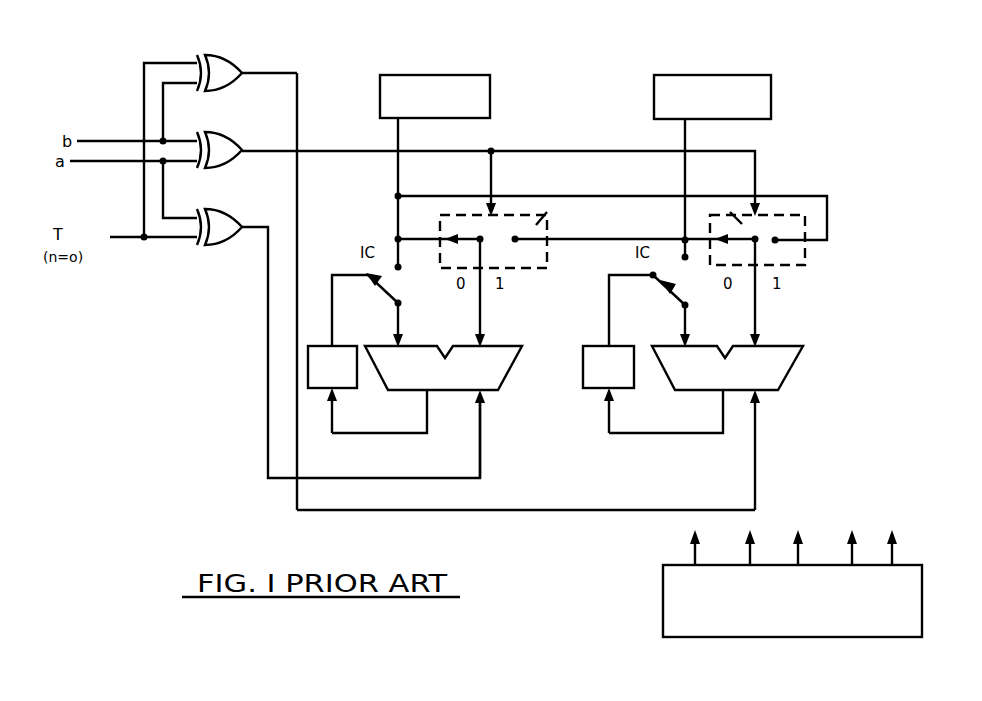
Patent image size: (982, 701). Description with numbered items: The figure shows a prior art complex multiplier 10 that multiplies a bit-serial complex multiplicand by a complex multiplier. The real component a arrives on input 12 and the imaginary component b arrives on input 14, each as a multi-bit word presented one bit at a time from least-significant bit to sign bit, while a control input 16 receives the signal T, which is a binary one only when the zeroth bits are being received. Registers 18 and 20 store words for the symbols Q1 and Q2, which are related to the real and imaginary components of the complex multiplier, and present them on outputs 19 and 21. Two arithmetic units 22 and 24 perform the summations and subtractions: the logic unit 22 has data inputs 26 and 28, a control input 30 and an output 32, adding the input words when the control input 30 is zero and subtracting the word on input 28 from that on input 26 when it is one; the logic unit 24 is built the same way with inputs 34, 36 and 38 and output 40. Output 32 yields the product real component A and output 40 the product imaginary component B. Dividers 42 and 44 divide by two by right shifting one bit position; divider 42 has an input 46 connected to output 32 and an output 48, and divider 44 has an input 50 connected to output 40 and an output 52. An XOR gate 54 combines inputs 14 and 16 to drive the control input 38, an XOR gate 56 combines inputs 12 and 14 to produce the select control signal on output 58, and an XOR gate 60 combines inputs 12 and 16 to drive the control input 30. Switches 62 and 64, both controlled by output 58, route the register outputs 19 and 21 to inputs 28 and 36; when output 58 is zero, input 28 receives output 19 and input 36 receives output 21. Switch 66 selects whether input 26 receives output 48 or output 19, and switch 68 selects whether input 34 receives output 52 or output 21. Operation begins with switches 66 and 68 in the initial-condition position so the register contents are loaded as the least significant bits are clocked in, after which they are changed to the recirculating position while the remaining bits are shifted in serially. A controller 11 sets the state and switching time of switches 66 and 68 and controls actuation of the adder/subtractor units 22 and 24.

The complex multiplier 10 is at (200, 455).
The controller 11 is at (875, 623).
The input 12 is at (128, 162).
The input 14 is at (128, 141).
The control input 16 is at (140, 250).
The register 18 is at (470, 75).
The output 19 is at (398, 172).
The register 20 is at (713, 75).
The output 21 is at (684, 140).
The arithmetic unit 22 is at (506, 374).
The arithmetic unit 24 is at (782, 364).
The data input 26 is at (400, 322).
The data input 28 is at (482, 306).
The control input 30 is at (480, 437).
The output 32 is at (427, 418).
The data input 34 is at (686, 322).
The data input 36 is at (757, 322).
The control input 38 is at (757, 433).
The output 40 is at (660, 433).
The divider 42 is at (357, 372).
The divider 44 is at (634, 372).
The input 46 is at (358, 433).
The output 48 is at (332, 300).
The input 50 is at (609, 430).
The output 52 is at (609, 303).
The XOR gate 54 is at (222, 60).
The XOR gate 56 is at (226, 157).
The output 58 is at (352, 150).
The XOR gate 60 is at (222, 220).
The switch 62 is at (549, 215).
The switch 64 is at (712, 217).
The switch 66 is at (381, 291).
The switch 68 is at (668, 292).